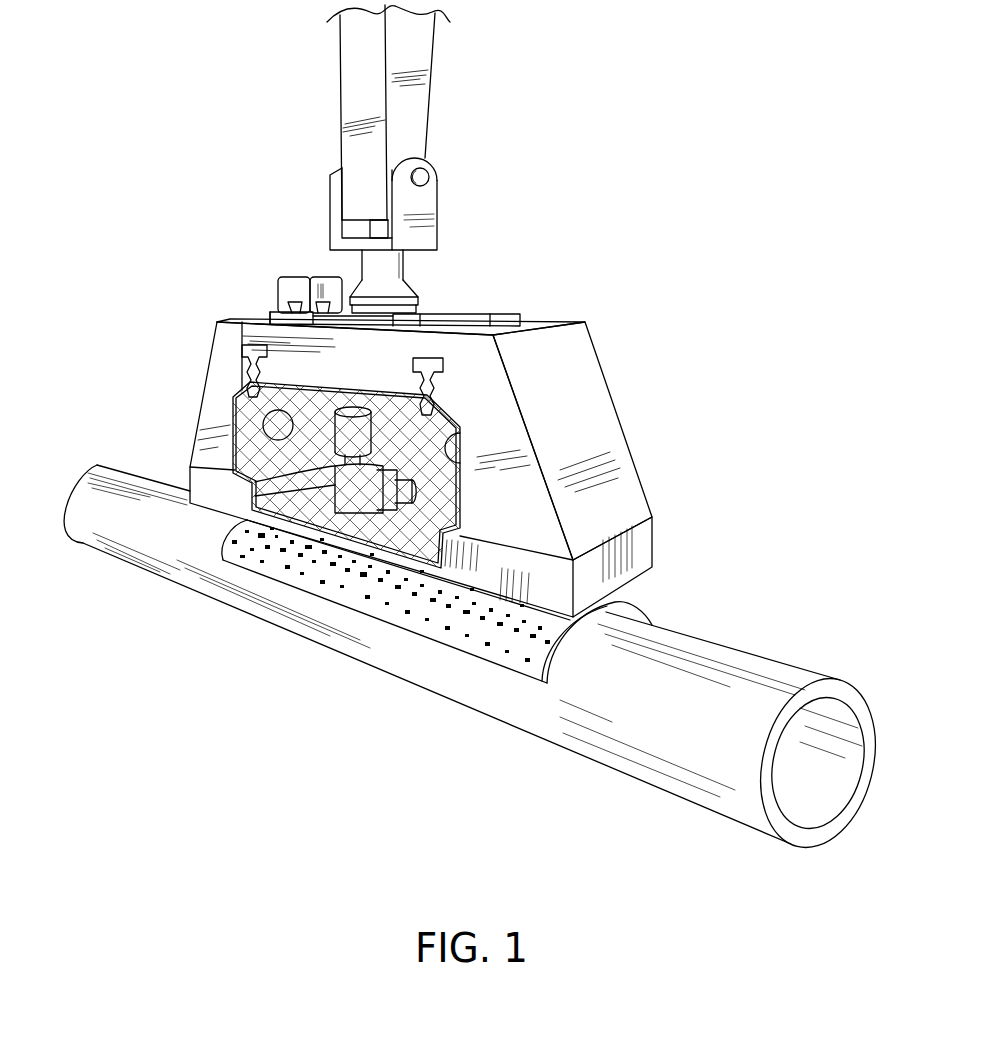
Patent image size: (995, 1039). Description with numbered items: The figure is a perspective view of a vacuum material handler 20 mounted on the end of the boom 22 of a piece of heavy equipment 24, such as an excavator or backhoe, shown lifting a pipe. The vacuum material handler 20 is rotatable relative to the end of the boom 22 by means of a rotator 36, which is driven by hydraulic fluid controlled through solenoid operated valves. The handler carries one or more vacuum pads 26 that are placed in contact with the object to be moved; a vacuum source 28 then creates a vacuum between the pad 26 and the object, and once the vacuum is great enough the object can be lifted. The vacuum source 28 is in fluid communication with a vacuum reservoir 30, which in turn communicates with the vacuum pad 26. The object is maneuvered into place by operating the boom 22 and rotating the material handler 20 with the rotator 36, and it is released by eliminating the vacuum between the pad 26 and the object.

The vacuum material handler 20 is at (660, 262).
The boom 22 is at (350, 56).
The heavy equipment 24 is at (422, 48).
The vacuum pad 26 is at (297, 580).
The vacuum source 28 is at (385, 510).
The vacuum reservoir 30 is at (287, 363).
The rotator 36 is at (403, 270).